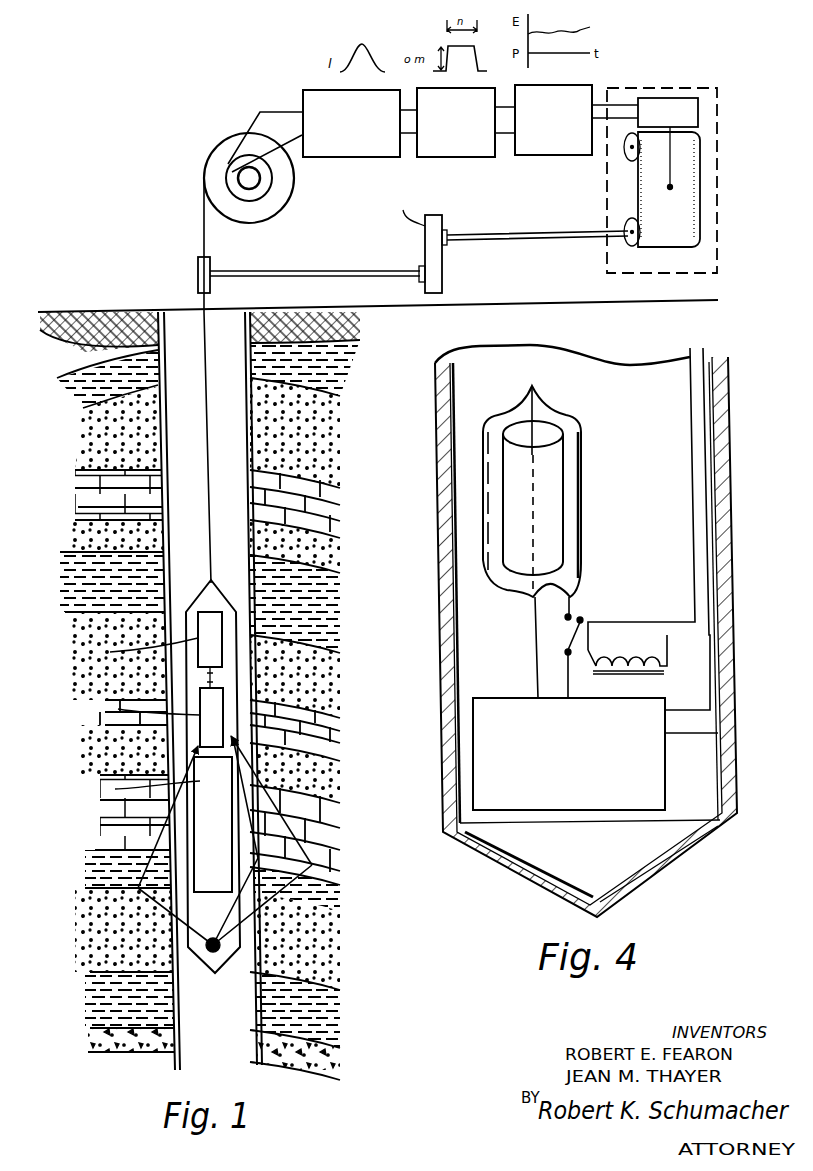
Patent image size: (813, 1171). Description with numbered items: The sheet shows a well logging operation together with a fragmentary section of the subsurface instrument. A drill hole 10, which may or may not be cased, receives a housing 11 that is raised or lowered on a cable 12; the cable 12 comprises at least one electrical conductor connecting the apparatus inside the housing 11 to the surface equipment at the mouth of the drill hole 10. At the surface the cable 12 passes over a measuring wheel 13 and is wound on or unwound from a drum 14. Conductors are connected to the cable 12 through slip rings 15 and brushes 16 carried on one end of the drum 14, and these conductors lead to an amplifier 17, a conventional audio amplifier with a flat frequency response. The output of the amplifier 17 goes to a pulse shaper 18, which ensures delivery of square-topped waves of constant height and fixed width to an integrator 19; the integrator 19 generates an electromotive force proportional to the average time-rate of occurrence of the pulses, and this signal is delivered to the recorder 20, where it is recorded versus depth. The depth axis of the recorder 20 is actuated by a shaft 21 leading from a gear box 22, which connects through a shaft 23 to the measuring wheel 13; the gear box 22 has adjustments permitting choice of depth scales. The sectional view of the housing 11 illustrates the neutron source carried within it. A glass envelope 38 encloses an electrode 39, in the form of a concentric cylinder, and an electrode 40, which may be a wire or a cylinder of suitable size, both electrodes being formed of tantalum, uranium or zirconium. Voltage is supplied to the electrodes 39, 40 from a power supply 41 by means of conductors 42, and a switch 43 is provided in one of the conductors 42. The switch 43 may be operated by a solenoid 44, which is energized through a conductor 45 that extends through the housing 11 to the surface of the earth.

In FIG. 1, the drill hole 10 is at (252, 591).
In FIG. 1, the housing 11 is at (168, 596).
In FIG. 4, the housing 11 is at (439, 695).
In FIG. 1, the cable 12 is at (207, 450).
In FIG. 1, the measuring wheel 13 is at (197, 258).
In FIG. 1, the drum 14 is at (261, 222).
In FIG. 1, the slip rings 15 is at (267, 186).
In FIG. 1, the brushes 16 is at (238, 163).
In FIG. 1, the amplifier 17 is at (392, 157).
In FIG. 1, the pulse shaper 18 is at (487, 158).
In FIG. 1, the integrator 19 is at (582, 156).
In FIG. 1, the recorder 20 is at (717, 181).
In FIG. 1, the shaft 21 is at (579, 241).
In FIG. 1, the gear box 22 is at (438, 270).
In FIG. 1, the shaft 23 is at (293, 269).
In FIG. 4, the glass envelope 38 is at (582, 554).
In FIG. 4, the electrode 39 is at (566, 503).
In FIG. 4, the electrode 40 is at (535, 411).
In FIG. 4, the power supply 41 is at (495, 698).
In FIG. 4, the conductors 42 is at (567, 672).
In FIG. 4, the switch 43 is at (571, 612).
In FIG. 4, the solenoid 44 is at (650, 652).
In FIG. 4, the conductor 45 is at (704, 519).